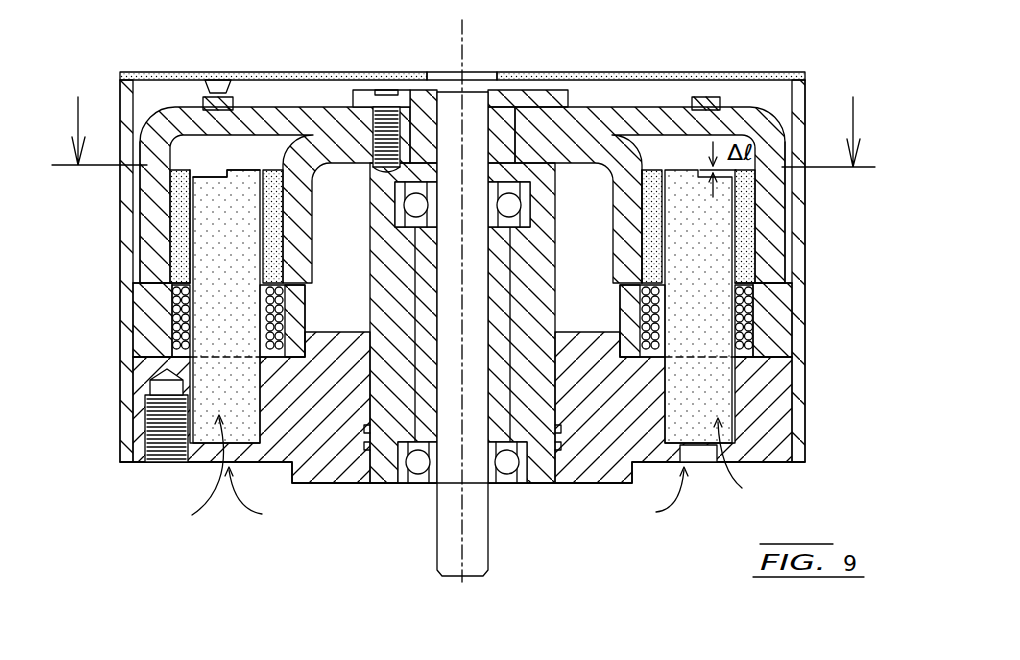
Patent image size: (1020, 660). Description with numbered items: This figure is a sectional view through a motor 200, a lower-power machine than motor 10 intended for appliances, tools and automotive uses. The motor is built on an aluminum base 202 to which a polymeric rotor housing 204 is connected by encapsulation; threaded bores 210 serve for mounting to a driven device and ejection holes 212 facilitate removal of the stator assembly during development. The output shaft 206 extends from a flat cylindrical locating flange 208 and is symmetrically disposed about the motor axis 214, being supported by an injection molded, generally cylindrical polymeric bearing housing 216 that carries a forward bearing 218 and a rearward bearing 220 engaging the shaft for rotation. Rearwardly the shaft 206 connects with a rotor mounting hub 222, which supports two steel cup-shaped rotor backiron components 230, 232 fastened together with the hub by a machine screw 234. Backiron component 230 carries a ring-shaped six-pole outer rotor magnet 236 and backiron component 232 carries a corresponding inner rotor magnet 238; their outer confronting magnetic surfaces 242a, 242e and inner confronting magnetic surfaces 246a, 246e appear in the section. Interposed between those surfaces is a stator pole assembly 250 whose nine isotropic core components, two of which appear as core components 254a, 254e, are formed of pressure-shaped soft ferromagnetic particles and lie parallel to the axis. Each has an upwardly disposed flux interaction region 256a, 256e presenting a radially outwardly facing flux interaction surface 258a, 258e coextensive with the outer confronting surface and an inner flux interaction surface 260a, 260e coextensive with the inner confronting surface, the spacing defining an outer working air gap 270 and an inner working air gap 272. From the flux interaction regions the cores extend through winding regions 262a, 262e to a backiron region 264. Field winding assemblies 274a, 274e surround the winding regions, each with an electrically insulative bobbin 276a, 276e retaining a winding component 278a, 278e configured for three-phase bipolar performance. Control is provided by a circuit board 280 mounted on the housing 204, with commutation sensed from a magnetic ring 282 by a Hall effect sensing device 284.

The motor 10 is at (463, 150).
The motor 200 is at (878, 28).
The aluminum base 202 is at (790, 428).
The polymeric rotor housing 204 is at (125, 93).
The output shaft 206 is at (443, 543).
The flat cylindrical locating flange 208 is at (330, 477).
The threaded bores 210 is at (163, 455).
The ejection holes 212 is at (693, 462).
The motor axis 214 is at (464, 60).
The bearing housing 216 is at (384, 470).
The forward bearing 218 is at (493, 484).
The rearward bearing 220 is at (508, 185).
The rotor mounting hub 222 is at (545, 97).
The rotor backiron component 230 is at (263, 115).
The rotor backiron component 232 is at (305, 153).
The machine screw 234 is at (374, 100).
The outer rotor magnet 236 is at (180, 253).
The inner rotor magnet 238 is at (643, 243).
The outer confronting magnetic surface 242e is at (185, 232).
The outer confronting magnetic surface 242a is at (758, 232).
The inner confronting magnetic surface 246e is at (262, 243).
The inner confronting magnetic surface 246a is at (661, 222).
The stator pole assembly 250 is at (456, 498).
The core component 254e is at (173, 296).
The core component 254a is at (758, 322).
The flux interaction region 256e is at (190, 273).
The flux interaction region 256a is at (752, 253).
The outer flux interaction surface 258e is at (168, 207).
The outer flux interaction surface 258a is at (760, 210).
The inner flux interaction surface 260e is at (257, 180).
The inner flux interaction surface 260a is at (662, 187).
The winding region 262e is at (172, 338).
The winding region 262a is at (752, 345).
The backiron region 264 is at (465, 474).
The outer working air gap 270 is at (197, 222).
The inner working air gap 272 is at (261, 195).
The field winding assembly 274e is at (172, 340).
The field winding assembly 274a is at (752, 345).
The bobbin 276e is at (172, 362).
The bobbin 276a is at (750, 375).
The winding component 278e is at (285, 312).
The winding component 278a is at (640, 318).
The circuit board 280 is at (160, 72).
The magnetic ring 282 is at (697, 97).
The Hall effect sensing device 284 is at (228, 83).